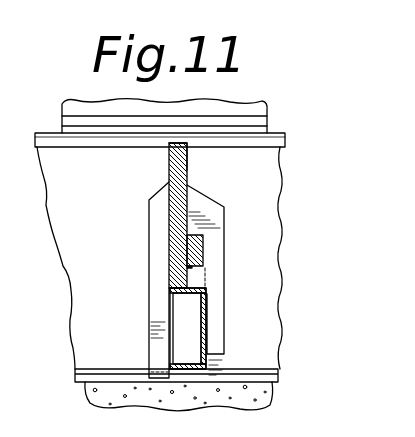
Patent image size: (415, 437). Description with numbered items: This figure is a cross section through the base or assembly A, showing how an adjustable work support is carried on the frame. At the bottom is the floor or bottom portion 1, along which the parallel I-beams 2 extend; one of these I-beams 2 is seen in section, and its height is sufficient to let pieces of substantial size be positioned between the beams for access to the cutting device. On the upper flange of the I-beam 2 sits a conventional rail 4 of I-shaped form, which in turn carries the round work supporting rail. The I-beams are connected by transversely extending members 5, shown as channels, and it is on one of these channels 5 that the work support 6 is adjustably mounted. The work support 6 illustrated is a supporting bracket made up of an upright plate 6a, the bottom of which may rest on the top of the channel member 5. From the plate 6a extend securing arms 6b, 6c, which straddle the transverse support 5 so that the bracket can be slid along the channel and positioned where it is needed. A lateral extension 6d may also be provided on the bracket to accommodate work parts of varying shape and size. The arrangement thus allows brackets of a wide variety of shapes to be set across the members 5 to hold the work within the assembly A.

The bottom portion 1 is at (95, 400).
The I-beam 2 is at (83, 265).
The conventional rail 4 is at (243, 110).
The transversely extending member 5 is at (202, 328).
The work support 6 is at (197, 176).
The upright plate 6a is at (177, 163).
The securing arm 6b is at (150, 323).
The securing arm 6c is at (218, 313).
The lateral extension 6d is at (203, 247).
The base or assembly A is at (287, 177).